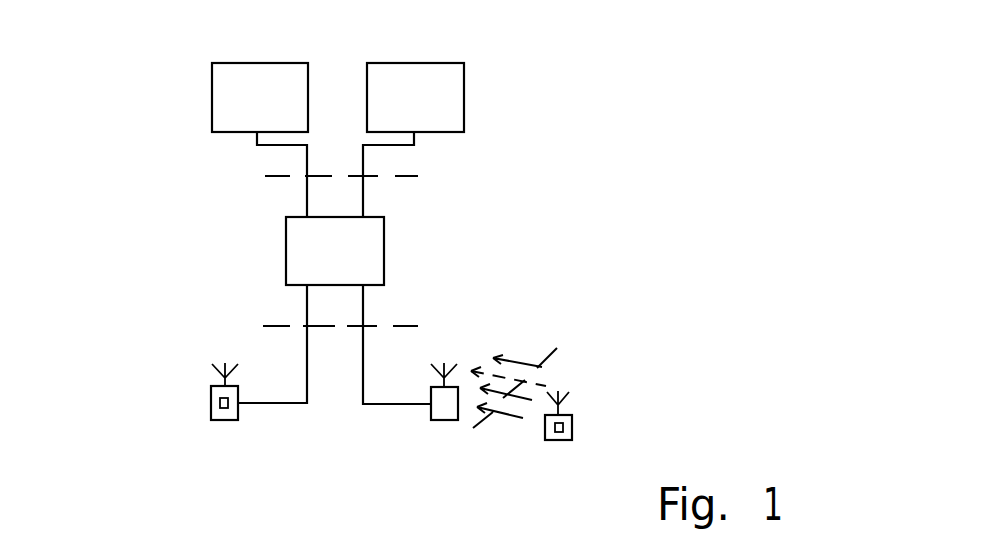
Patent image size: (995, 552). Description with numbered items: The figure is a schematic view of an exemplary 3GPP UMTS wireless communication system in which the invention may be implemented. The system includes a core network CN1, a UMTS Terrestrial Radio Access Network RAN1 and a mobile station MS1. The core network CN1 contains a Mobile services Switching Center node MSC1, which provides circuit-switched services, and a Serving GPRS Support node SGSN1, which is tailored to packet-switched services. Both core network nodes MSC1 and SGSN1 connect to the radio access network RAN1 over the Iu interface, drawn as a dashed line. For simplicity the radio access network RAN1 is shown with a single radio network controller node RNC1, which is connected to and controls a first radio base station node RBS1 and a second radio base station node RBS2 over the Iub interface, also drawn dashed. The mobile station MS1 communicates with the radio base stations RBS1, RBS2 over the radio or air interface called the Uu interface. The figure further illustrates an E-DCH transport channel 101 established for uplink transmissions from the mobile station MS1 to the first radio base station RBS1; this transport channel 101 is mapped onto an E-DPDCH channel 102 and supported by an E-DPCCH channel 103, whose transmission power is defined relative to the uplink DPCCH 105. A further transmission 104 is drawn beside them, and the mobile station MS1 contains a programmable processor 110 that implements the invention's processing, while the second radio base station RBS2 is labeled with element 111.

The E-DCH transport channel 101 is at (472, 370).
The E-DPDCH channel 102 is at (534, 398).
The E-DPCCH channel 103 is at (548, 358).
The downlink message 104 is at (516, 361).
The uplink Dedicated Physical Control Channel 105 is at (495, 411).
The programmable processor 110 is at (565, 422).
The radio base station memory 111 is at (212, 405).
The Mobile services Switching Center node MSC1 is at (258, 63).
The Serving GPRS Support node SGSN1 is at (414, 63).
The radio network controller node RNC1 is at (286, 247).
The first radio base station node RBS1 is at (454, 422).
The second radio base station node RBS2 is at (186, 410).
The mobile station MS1 is at (591, 446).
The core network CN1 is at (128, 70).
The UMTS Terrestrial Radio Access Network RAN1 is at (152, 240).
The Iu interface Iu is at (317, 175).
The Iub interface Iub is at (315, 325).
The Uu interface Uu is at (567, 338).